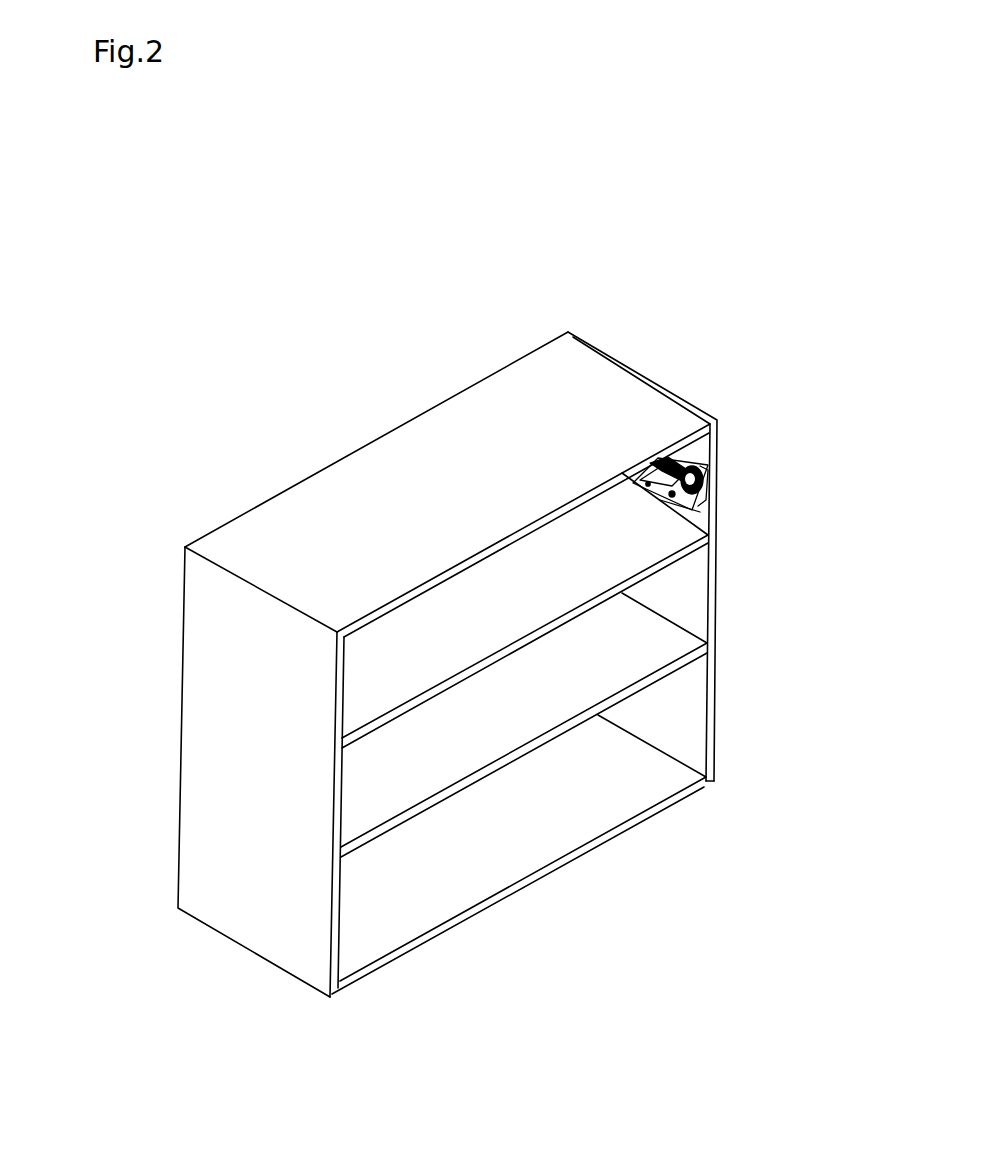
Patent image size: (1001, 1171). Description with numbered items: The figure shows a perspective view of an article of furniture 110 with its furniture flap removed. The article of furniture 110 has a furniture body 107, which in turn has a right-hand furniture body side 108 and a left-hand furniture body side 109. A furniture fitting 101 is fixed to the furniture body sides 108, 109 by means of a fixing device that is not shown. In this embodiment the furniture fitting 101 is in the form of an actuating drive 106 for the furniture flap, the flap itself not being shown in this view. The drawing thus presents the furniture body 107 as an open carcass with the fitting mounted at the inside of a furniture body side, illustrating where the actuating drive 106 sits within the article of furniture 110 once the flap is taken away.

The furniture fitting 101 is at (740, 434).
The actuating drive 106 is at (705, 480).
The furniture body 107 is at (432, 460).
The right-hand furniture body side 108 is at (633, 716).
The left-hand furniture body side 109 is at (233, 787).
The article of furniture 110 is at (455, 580).